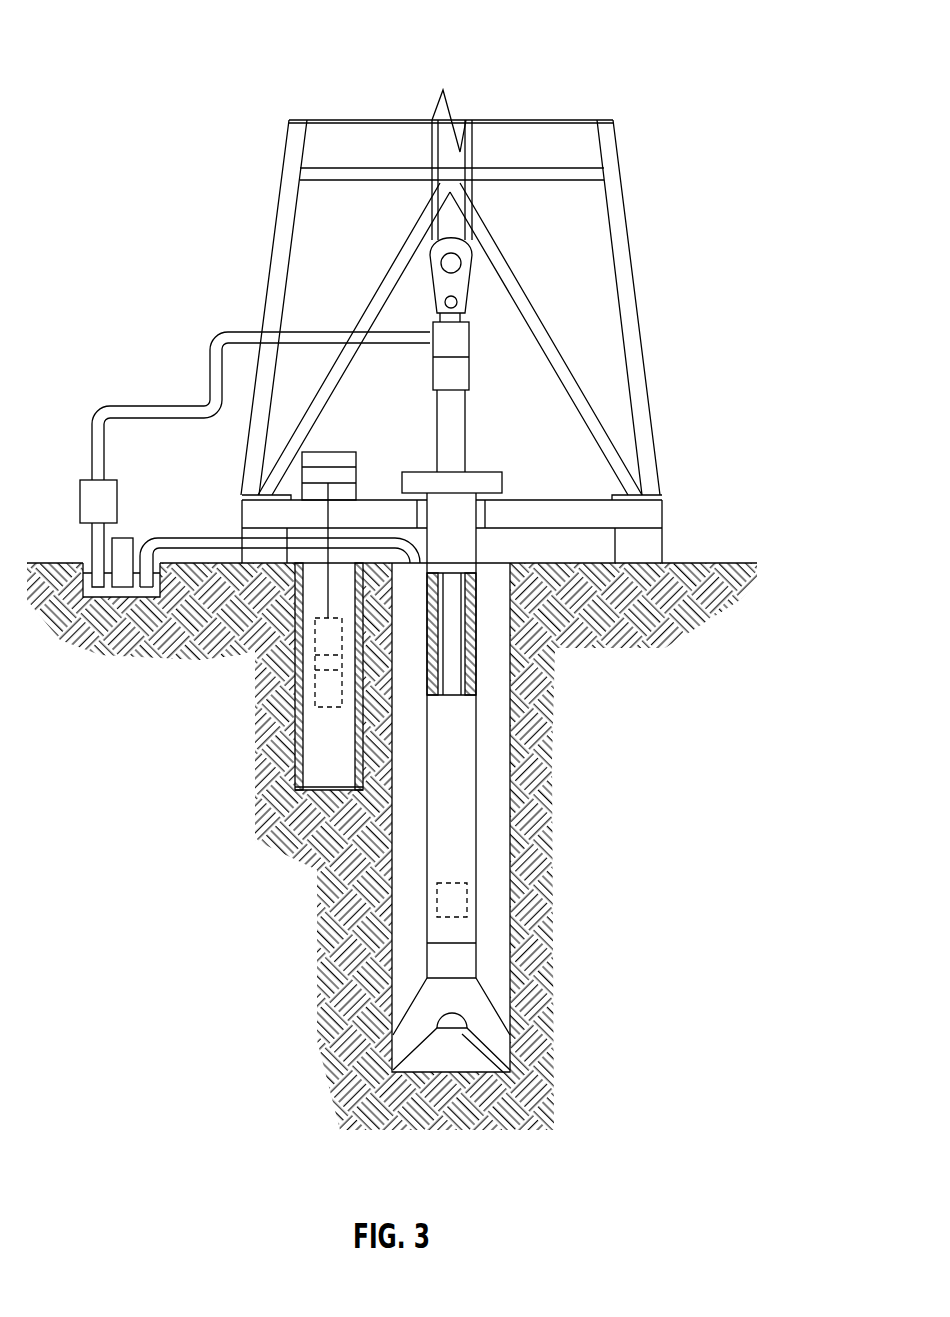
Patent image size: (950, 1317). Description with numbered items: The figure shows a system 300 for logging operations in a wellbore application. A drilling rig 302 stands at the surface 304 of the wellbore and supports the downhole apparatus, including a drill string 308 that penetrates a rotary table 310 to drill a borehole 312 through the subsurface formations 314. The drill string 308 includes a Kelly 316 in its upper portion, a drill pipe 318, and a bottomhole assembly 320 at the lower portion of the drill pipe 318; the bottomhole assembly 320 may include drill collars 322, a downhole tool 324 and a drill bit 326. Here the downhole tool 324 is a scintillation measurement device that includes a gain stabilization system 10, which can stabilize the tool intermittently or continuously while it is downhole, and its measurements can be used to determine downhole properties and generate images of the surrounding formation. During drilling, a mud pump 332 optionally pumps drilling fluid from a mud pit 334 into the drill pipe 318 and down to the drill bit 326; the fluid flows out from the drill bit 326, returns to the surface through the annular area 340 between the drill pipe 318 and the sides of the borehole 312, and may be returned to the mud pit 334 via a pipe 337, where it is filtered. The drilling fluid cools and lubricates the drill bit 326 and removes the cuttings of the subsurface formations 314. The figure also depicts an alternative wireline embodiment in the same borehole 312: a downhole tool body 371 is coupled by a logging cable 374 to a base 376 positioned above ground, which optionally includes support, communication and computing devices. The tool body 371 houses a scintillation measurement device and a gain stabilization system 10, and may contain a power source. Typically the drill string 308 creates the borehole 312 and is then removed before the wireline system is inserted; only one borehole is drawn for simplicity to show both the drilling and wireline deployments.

The system 300 is at (110, 44).
The drilling rig 302 is at (622, 200).
The surface 304 is at (726, 563).
The drill string 308 is at (452, 602).
The rotary table 310 is at (472, 472).
The borehole 312 is at (510, 645).
The subsurface formations 314 is at (647, 652).
The Kelly 316 is at (467, 407).
The drill pipe 318 is at (452, 680).
The bottomhole assembly 320 is at (740, 687).
The drill collars 322 is at (462, 731).
The downhole tool 324 is at (478, 870).
The drill bit 326 is at (480, 1018).
The mud pump 332 is at (91, 480).
The mud pit 334 is at (72, 642).
The pipe 337 is at (197, 537).
The annular area 340 is at (412, 792).
The downhole tool body 371 is at (323, 635).
The logging cable 374 is at (328, 585).
The base 376 is at (341, 452).
The gain stabilization system 10 is at (432, 902).